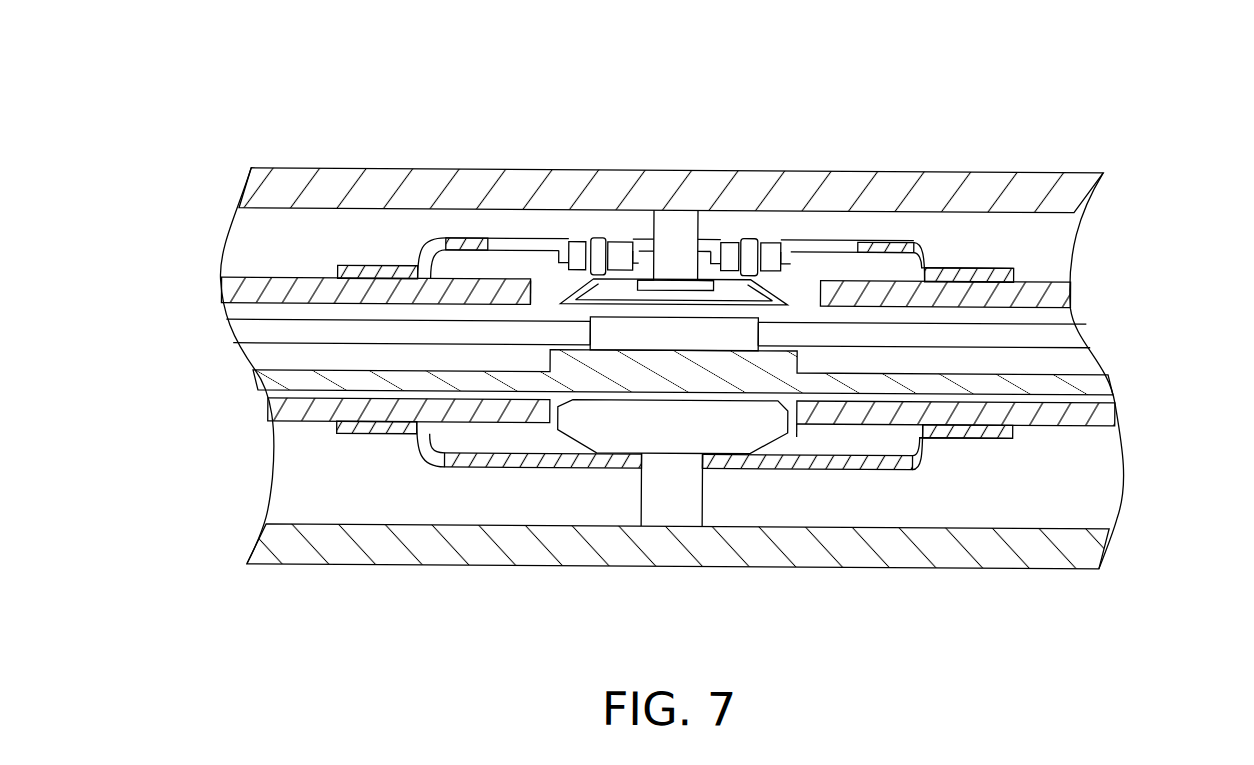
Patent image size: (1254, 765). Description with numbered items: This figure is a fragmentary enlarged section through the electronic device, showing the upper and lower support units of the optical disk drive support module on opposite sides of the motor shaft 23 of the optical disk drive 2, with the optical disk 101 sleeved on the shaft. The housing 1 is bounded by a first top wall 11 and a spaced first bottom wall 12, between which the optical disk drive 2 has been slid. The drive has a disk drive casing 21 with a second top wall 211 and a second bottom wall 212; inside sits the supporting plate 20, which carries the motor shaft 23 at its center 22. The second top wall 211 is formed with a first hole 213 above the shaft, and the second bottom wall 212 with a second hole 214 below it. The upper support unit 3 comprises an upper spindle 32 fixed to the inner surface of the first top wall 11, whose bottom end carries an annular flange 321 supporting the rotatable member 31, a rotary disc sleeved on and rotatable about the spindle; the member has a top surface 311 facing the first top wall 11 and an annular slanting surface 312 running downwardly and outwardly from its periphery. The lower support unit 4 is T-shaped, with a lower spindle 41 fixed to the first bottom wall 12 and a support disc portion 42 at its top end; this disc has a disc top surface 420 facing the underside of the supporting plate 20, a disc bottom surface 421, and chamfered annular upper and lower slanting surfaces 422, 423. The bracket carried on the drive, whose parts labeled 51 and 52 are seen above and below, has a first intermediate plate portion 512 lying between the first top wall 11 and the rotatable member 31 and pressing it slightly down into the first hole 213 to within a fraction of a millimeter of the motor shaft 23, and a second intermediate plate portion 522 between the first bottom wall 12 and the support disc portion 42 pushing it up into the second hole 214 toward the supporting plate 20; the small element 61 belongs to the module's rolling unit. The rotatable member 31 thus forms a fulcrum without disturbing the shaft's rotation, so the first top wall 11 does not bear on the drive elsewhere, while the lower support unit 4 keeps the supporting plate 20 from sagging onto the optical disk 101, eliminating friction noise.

The housing 1 is at (263, 166).
The first top wall 11 is at (1027, 190).
The first bottom wall 12 is at (1027, 553).
The optical disk drive 2 is at (702, 368).
The disk drive casing 21 is at (1053, 281).
The second top wall 211 is at (1057, 298).
The second bottom wall 212 is at (1090, 413).
The first hole 213 is at (540, 293).
The second hole 214 is at (540, 382).
The optical disk 101 is at (1060, 337).
The supporting plate 20 is at (1087, 387).
The center 22 is at (800, 358).
The motor shaft 23 is at (627, 337).
The upper support unit 3 is at (729, 185).
The rotatable member 31 is at (735, 284).
The top surface 311 is at (779, 262).
The annular slanting surface 312 is at (781, 297).
The upper spindle 32 is at (675, 228).
The annular flange 321 is at (702, 290).
The lower support unit 4 is at (715, 503).
The lower spindle 41 is at (683, 508).
The support disc portion 42 is at (745, 420).
The disc top surface 420 is at (737, 395).
The disc bottom surface 421 is at (712, 467).
The flange strip of fastening member 422 is at (540, 382).
The annular lower slanting surface 423 is at (780, 437).
The first contact pad 51 is at (371, 265).
The first intermediate plate portion 512 is at (468, 243).
The second contact pad 52 is at (366, 435).
The second intermediate plate portion 522 is at (430, 457).
The solder joint 61 is at (598, 245).